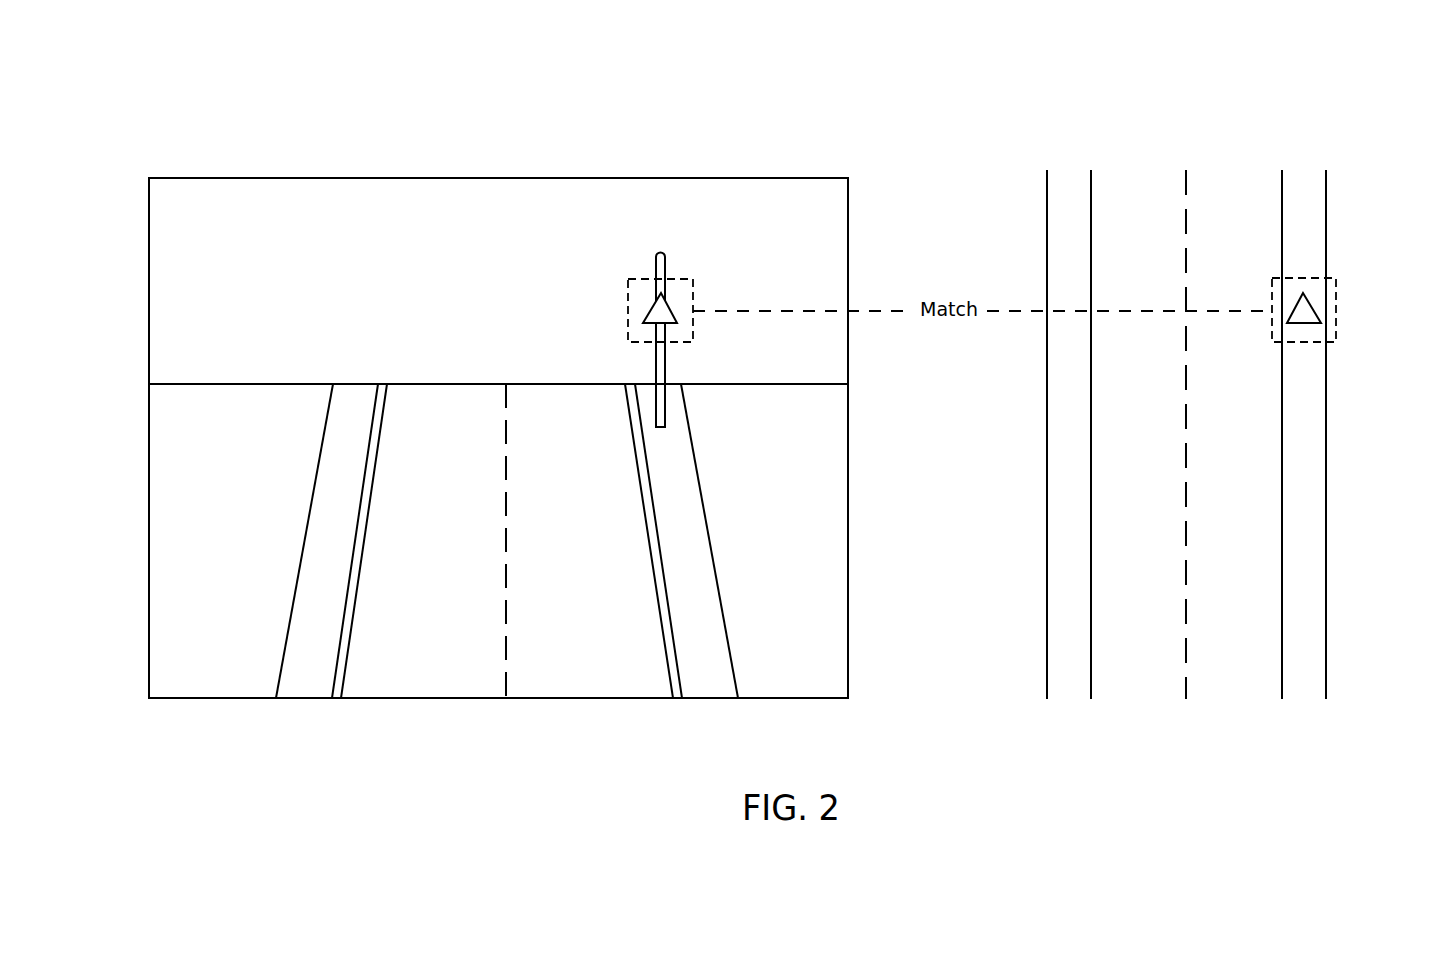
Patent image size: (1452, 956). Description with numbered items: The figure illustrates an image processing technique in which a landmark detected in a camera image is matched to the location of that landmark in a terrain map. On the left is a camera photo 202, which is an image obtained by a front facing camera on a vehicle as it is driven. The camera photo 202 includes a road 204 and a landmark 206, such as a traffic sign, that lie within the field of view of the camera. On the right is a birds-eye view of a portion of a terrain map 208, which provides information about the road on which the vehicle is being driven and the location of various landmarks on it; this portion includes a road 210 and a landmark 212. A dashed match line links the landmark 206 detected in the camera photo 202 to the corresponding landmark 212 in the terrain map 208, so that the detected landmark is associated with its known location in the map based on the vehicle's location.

The camera photo 202 is at (498, 147).
The road 204 is at (312, 485).
The landmark 206 is at (628, 305).
The terrain map 208 is at (1189, 112).
The road 210 is at (1312, 413).
The landmark 212 is at (1313, 306).